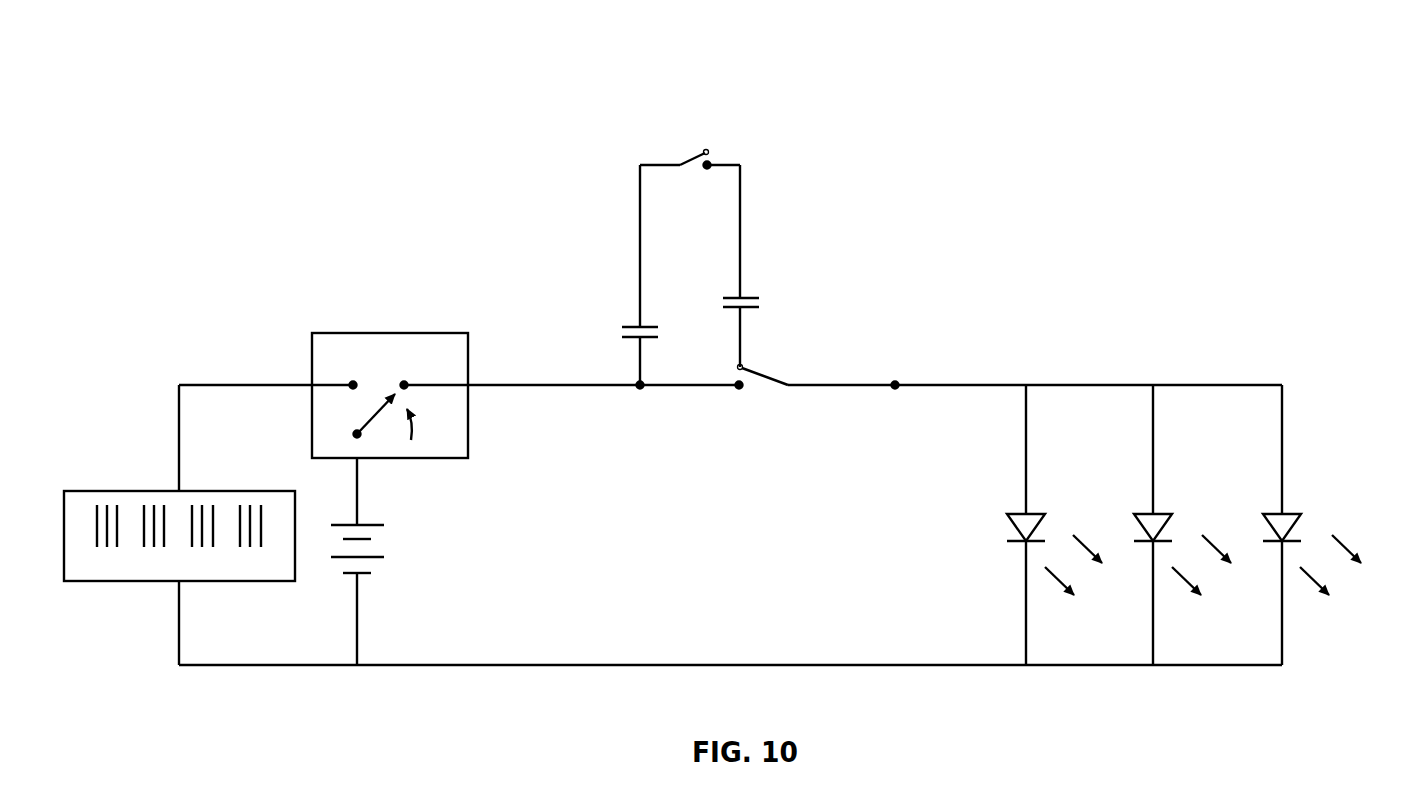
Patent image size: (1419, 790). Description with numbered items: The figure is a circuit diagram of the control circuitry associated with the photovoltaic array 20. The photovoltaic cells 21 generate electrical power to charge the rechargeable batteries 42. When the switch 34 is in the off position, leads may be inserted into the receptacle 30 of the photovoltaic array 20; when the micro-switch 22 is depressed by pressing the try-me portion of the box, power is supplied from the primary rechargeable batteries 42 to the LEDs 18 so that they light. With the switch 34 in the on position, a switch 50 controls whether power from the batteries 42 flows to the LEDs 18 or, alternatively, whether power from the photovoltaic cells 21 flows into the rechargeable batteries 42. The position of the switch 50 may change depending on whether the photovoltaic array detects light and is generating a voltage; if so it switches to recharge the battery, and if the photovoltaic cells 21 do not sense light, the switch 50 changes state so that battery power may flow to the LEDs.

The photovoltaic array 20 is at (177, 73).
The photovoltaic cells 21 is at (120, 489).
The switch 50 is at (367, 332).
The rechargeable batteries 42 is at (397, 552).
The receptacle 30 is at (622, 330).
The micro-switch 22 is at (674, 149).
The switch 34 is at (755, 387).
The LEDs 18 is at (1333, 519).